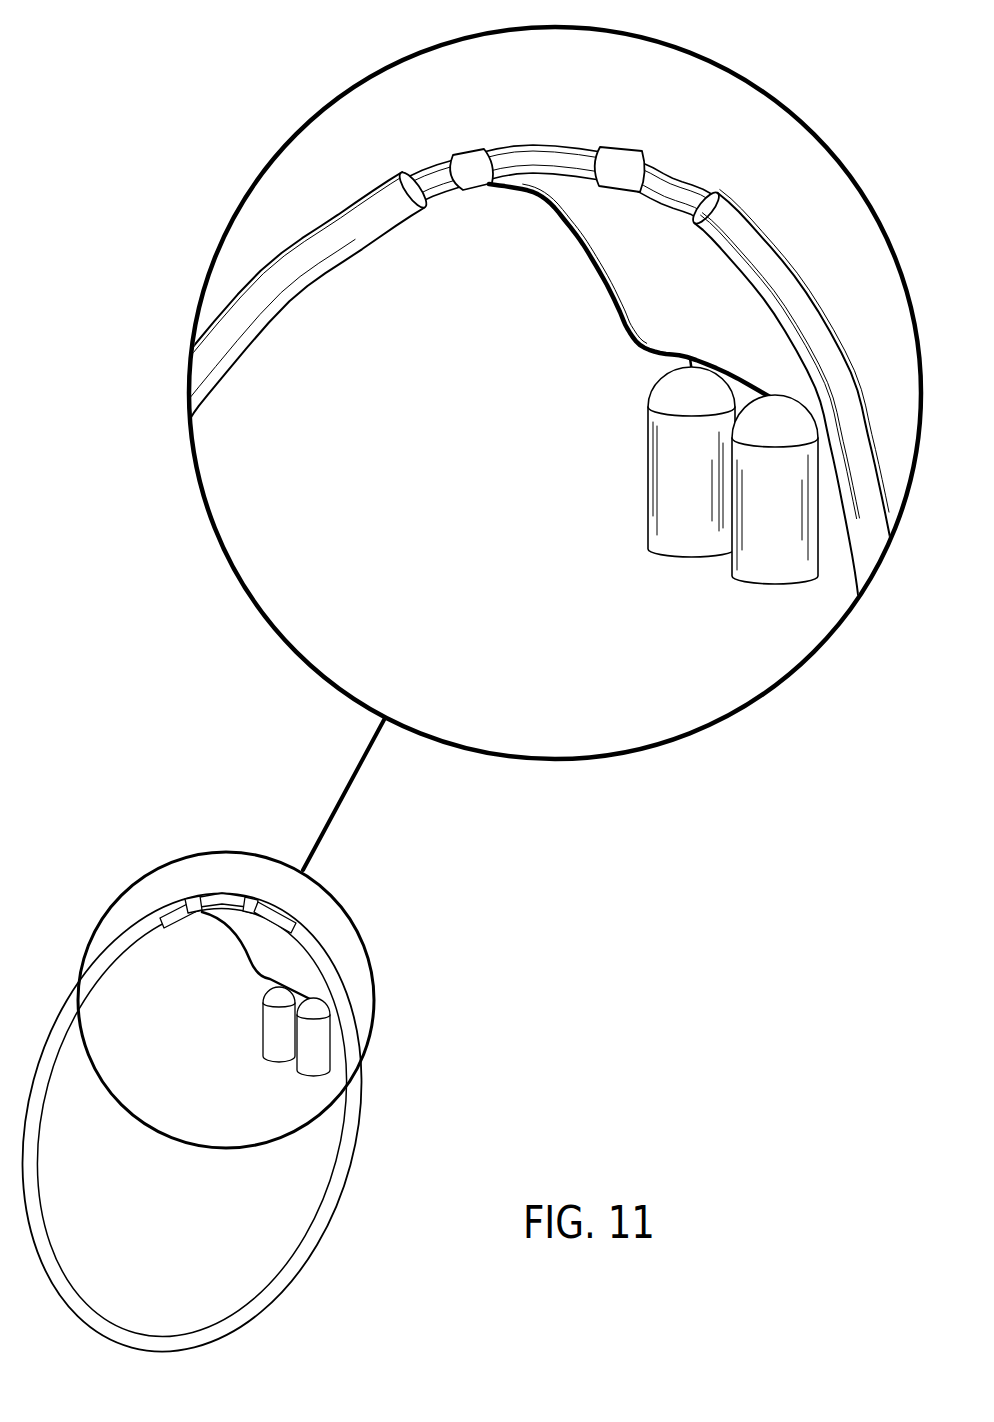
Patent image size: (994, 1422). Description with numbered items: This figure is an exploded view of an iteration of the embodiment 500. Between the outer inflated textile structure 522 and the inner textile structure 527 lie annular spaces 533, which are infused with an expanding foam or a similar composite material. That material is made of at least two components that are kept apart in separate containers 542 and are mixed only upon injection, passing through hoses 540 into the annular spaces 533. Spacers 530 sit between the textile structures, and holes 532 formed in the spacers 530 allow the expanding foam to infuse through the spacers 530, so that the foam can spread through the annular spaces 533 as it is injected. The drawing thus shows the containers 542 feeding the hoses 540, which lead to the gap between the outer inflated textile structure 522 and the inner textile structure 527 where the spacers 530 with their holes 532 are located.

The iteration of the embodiment 500 is at (101, 86).
The outer inflated textile structure 522 is at (295, 267).
The inner textile structure 527 is at (533, 162).
The spacers 530 is at (478, 186).
The holes 532 is at (598, 145).
The annular spaces 533 is at (436, 156).
The hoses 540 is at (623, 312).
The containers 542 is at (681, 518).